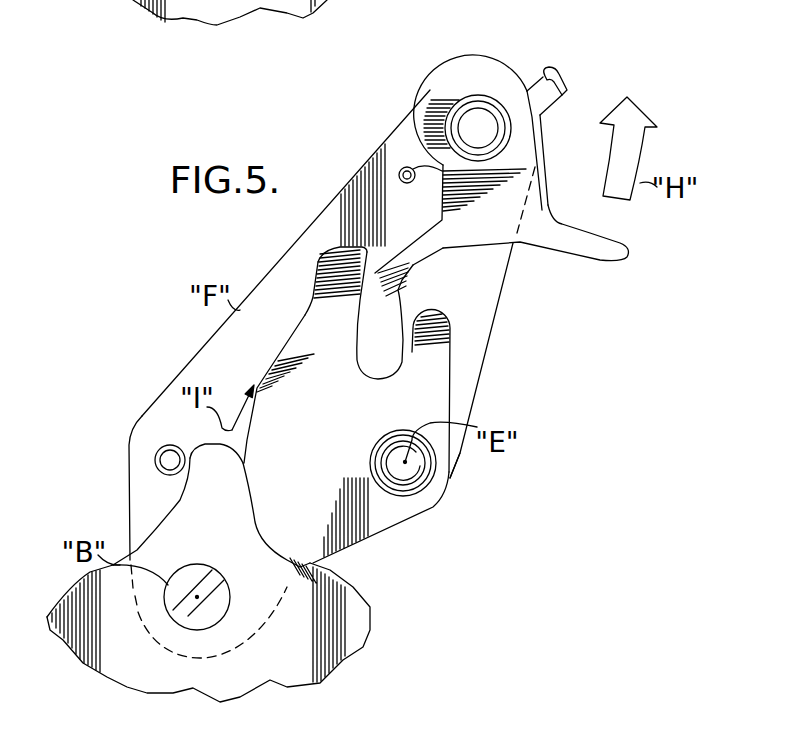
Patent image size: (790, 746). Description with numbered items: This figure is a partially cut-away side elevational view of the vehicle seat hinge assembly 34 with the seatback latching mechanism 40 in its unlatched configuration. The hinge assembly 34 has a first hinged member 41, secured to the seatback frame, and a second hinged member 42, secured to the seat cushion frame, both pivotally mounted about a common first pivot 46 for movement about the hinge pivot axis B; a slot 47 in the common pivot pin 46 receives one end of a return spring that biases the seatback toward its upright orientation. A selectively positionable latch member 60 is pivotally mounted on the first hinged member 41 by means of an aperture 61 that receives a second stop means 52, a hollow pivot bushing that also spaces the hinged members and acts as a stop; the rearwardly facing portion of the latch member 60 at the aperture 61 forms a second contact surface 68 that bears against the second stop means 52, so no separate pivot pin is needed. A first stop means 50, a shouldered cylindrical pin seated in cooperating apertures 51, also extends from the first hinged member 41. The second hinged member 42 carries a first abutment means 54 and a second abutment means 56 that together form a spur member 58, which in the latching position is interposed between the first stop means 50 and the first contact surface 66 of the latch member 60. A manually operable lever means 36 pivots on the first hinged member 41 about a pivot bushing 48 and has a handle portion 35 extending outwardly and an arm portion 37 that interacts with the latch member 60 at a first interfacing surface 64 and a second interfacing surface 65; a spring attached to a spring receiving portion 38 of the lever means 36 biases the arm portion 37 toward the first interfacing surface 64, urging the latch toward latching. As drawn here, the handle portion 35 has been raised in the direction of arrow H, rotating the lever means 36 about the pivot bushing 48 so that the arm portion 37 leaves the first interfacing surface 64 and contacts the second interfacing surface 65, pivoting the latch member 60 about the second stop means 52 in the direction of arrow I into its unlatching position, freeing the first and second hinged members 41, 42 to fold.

The vehicle seat hinge assembly 34 is at (115, 286).
The handle portion 35 is at (628, 256).
The manually operable lever means 36 is at (497, 222).
The arm portion 37 is at (395, 317).
The spring receiving portion 38 is at (555, 84).
The seatback latching mechanism 40 is at (487, 407).
The first hinged member 41 is at (480, 345).
The second hinged member 42 is at (360, 620).
The common first pivot 46 is at (200, 564).
The slot 47 is at (215, 605).
The pivot bushing 48 is at (483, 94).
The first stop means 50 is at (155, 460).
The cooperating apertures 51 is at (150, 417).
The second stop means 52 is at (457, 487).
The first abutment means 54 is at (195, 455).
The second abutment means 56 is at (248, 478).
The spur member 58 is at (140, 503).
The selectively positionable latch member 60 is at (310, 318).
The aperture 61 is at (460, 455).
The first interfacing surface 64 is at (355, 337).
The second interfacing surface 65 is at (403, 352).
The first contact surface 66 is at (250, 428).
The second contact surface 68 is at (378, 437).